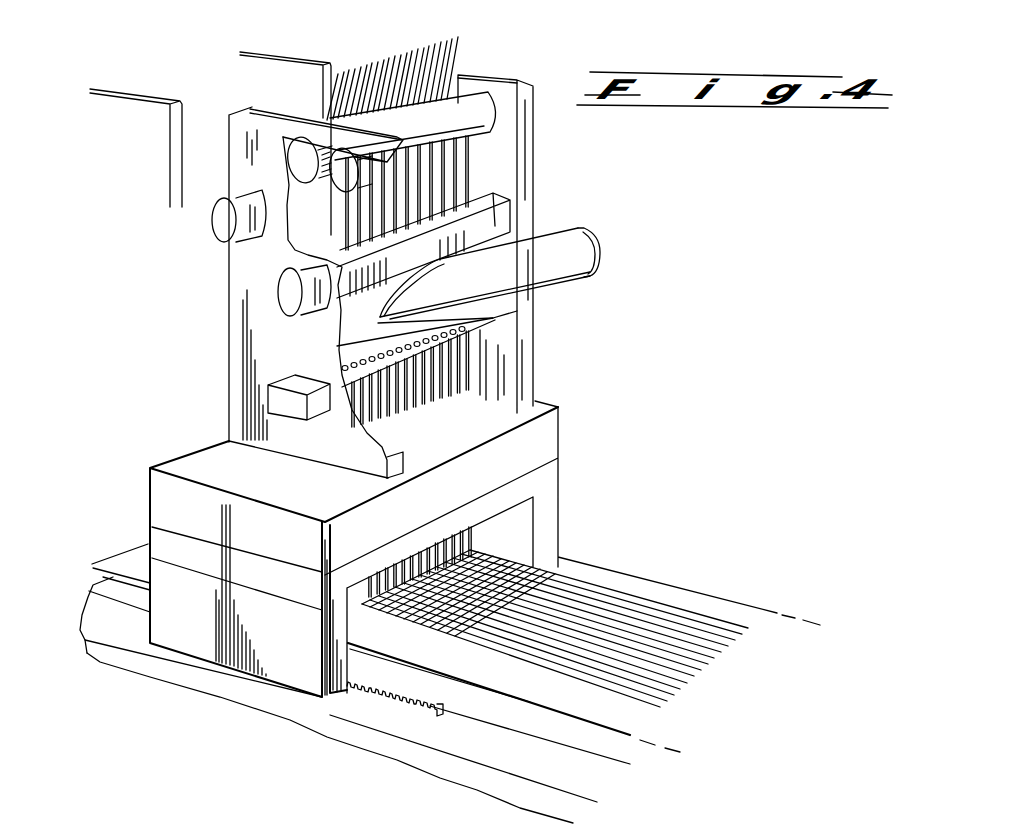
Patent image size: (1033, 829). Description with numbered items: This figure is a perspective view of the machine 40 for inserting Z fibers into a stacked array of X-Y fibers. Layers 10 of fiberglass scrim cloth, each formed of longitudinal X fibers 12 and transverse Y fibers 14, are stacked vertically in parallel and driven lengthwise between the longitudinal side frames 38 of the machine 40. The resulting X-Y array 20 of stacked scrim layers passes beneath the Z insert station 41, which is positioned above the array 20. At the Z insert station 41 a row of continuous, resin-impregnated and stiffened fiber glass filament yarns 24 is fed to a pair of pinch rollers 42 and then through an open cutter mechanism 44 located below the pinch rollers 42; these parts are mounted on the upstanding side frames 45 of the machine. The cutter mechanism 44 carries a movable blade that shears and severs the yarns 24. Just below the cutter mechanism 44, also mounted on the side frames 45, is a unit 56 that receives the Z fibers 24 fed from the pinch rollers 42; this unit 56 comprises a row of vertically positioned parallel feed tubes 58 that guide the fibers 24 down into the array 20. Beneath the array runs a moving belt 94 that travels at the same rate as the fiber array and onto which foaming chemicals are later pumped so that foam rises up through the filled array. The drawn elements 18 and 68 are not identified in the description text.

The layers 10 is at (610, 598).
The longitudinal X fibers 12 is at (653, 652).
The transverse Y fibers 14 is at (447, 620).
The heddle needles 18 is at (463, 540).
The X-Y array 20 is at (392, 623).
The fiber glass filament yarns 24 is at (442, 77).
The longitudinal side frames 38 is at (482, 708).
The machine 40 is at (583, 523).
The Z insert station 41 is at (542, 108).
The pinch rollers 42 is at (337, 152).
The cutter mechanism 44 is at (490, 200).
The upstanding side frames 45 is at (238, 276).
The unit 56 is at (550, 235).
The feed tubes 58 is at (443, 377).
The rod end cap 68 is at (552, 280).
The moving belt 94 is at (528, 705).